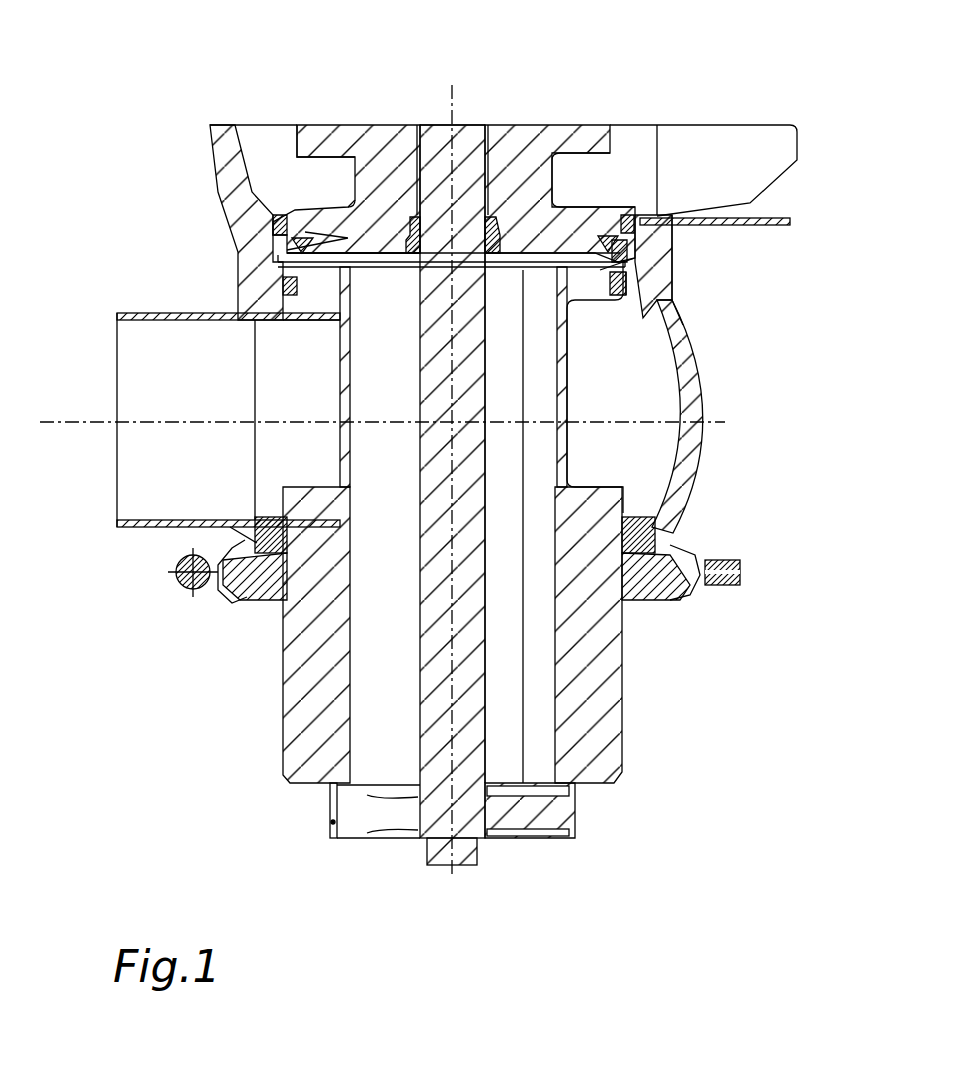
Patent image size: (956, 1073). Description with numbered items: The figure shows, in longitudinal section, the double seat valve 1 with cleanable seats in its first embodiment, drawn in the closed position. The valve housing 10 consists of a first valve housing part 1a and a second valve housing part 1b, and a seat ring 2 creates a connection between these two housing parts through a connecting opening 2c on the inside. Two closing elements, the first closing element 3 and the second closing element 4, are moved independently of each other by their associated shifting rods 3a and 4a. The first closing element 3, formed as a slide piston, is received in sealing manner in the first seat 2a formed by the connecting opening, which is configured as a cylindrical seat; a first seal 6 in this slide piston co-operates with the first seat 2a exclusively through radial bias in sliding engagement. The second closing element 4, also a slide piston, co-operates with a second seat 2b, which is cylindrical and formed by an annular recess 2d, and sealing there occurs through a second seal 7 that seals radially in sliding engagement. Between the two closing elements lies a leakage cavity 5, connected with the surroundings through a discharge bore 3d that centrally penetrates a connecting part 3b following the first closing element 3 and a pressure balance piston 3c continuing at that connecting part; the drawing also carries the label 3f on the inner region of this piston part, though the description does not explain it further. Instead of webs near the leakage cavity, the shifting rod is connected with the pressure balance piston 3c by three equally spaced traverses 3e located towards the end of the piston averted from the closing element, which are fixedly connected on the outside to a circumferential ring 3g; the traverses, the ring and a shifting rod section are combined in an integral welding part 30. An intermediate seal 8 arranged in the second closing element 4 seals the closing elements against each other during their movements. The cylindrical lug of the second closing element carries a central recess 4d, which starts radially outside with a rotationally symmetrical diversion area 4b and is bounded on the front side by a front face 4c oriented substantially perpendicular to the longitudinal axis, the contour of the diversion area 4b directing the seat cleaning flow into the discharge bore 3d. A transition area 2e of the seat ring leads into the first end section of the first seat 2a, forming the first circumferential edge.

The double seat valve 1 is at (140, 263).
The first valve housing part 1a is at (678, 493).
The second valve housing part 1b is at (222, 143).
The seat ring 2 is at (642, 293).
The first seat 2a is at (683, 315).
The second seat 2b is at (750, 203).
The connecting opening 2c is at (281, 222).
The annular recess 2d is at (748, 212).
The transition area 2e is at (672, 270).
The first closing element 3 is at (597, 282).
The first shifting rod 3a is at (437, 487).
The connecting part 3b is at (345, 440).
The pressure balance piston 3c is at (308, 642).
The discharge bore 3d is at (378, 745).
The traverses 3e is at (545, 820).
The bore 3f is at (530, 275).
The circumferential ring 3g is at (331, 838).
The second closing element 4 is at (590, 235).
The second shifting rod 4a is at (328, 142).
The diversion area 4b is at (345, 240).
The front face 4c is at (393, 275).
The central recess 4d is at (372, 255).
The leakage cavity 5 is at (451, 292).
The first seal 6 is at (628, 292).
The second seal 7 is at (625, 237).
The intermediate seal 8 is at (605, 240).
The valve housing 10 is at (222, 285).
The integral welding part 30 is at (389, 846).